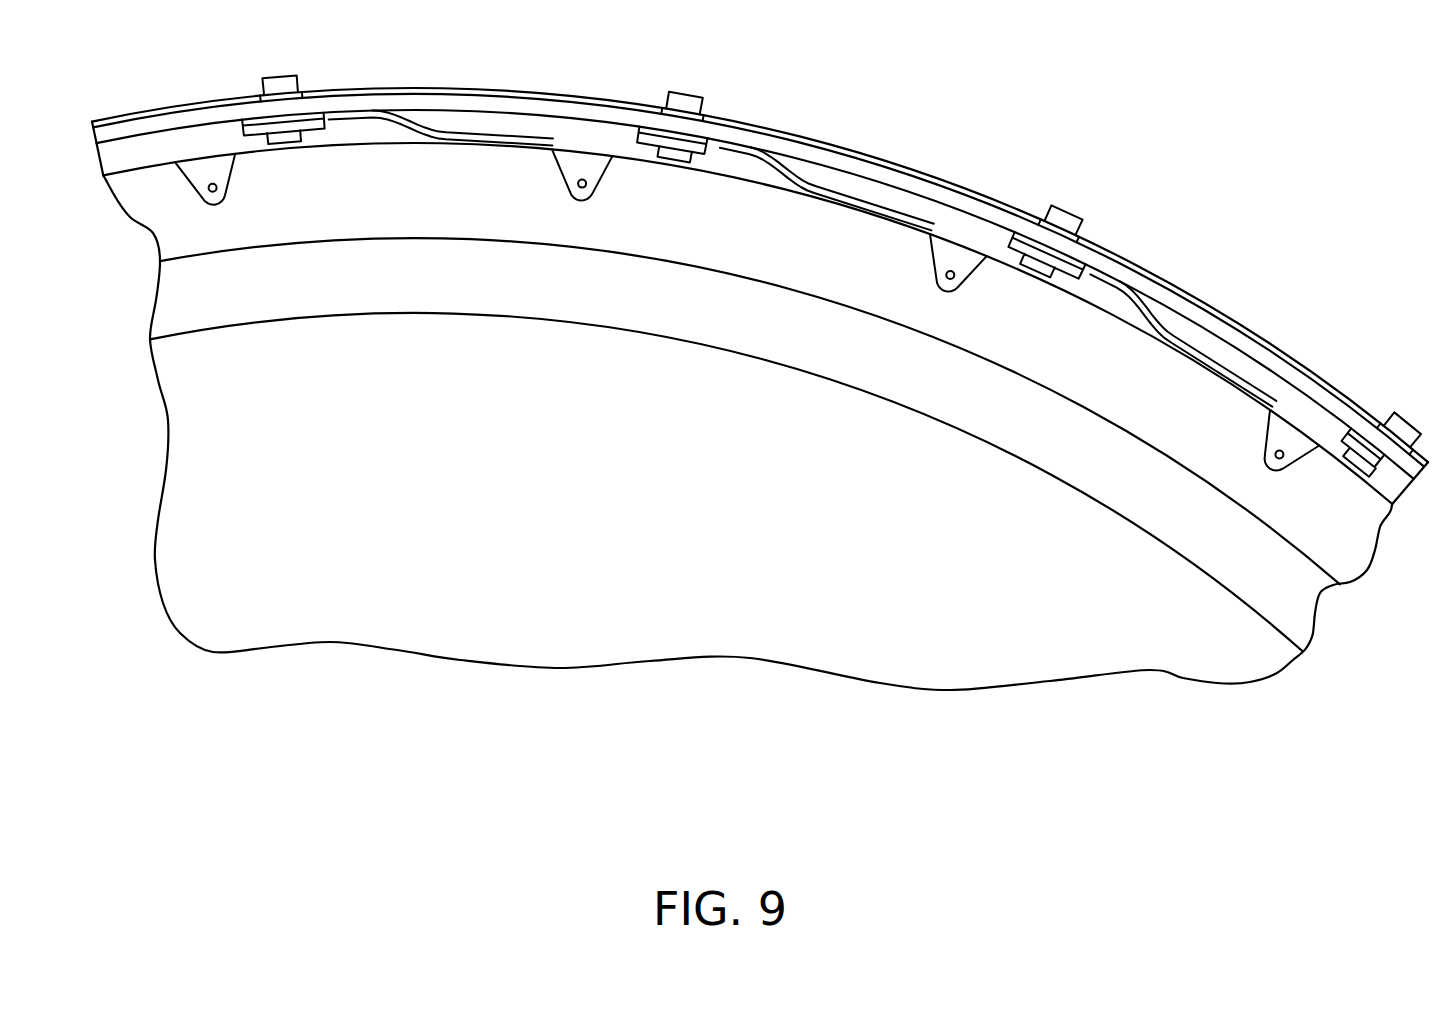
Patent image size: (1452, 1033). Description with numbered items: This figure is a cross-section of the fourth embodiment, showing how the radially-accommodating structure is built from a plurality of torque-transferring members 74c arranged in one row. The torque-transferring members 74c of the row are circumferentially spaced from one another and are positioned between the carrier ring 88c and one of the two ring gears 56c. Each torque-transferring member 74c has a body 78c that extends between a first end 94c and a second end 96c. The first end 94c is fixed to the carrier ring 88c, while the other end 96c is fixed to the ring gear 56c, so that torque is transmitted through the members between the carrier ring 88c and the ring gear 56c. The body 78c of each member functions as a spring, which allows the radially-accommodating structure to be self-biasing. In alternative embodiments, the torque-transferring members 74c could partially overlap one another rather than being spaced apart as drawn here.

The ring gear 56c is at (1217, 413).
The torque-transferring member 74c is at (857, 192).
The body 78c is at (1160, 323).
The carrier ring 88c is at (997, 220).
The first end 94c is at (1053, 258).
The second end 96c is at (1283, 476).